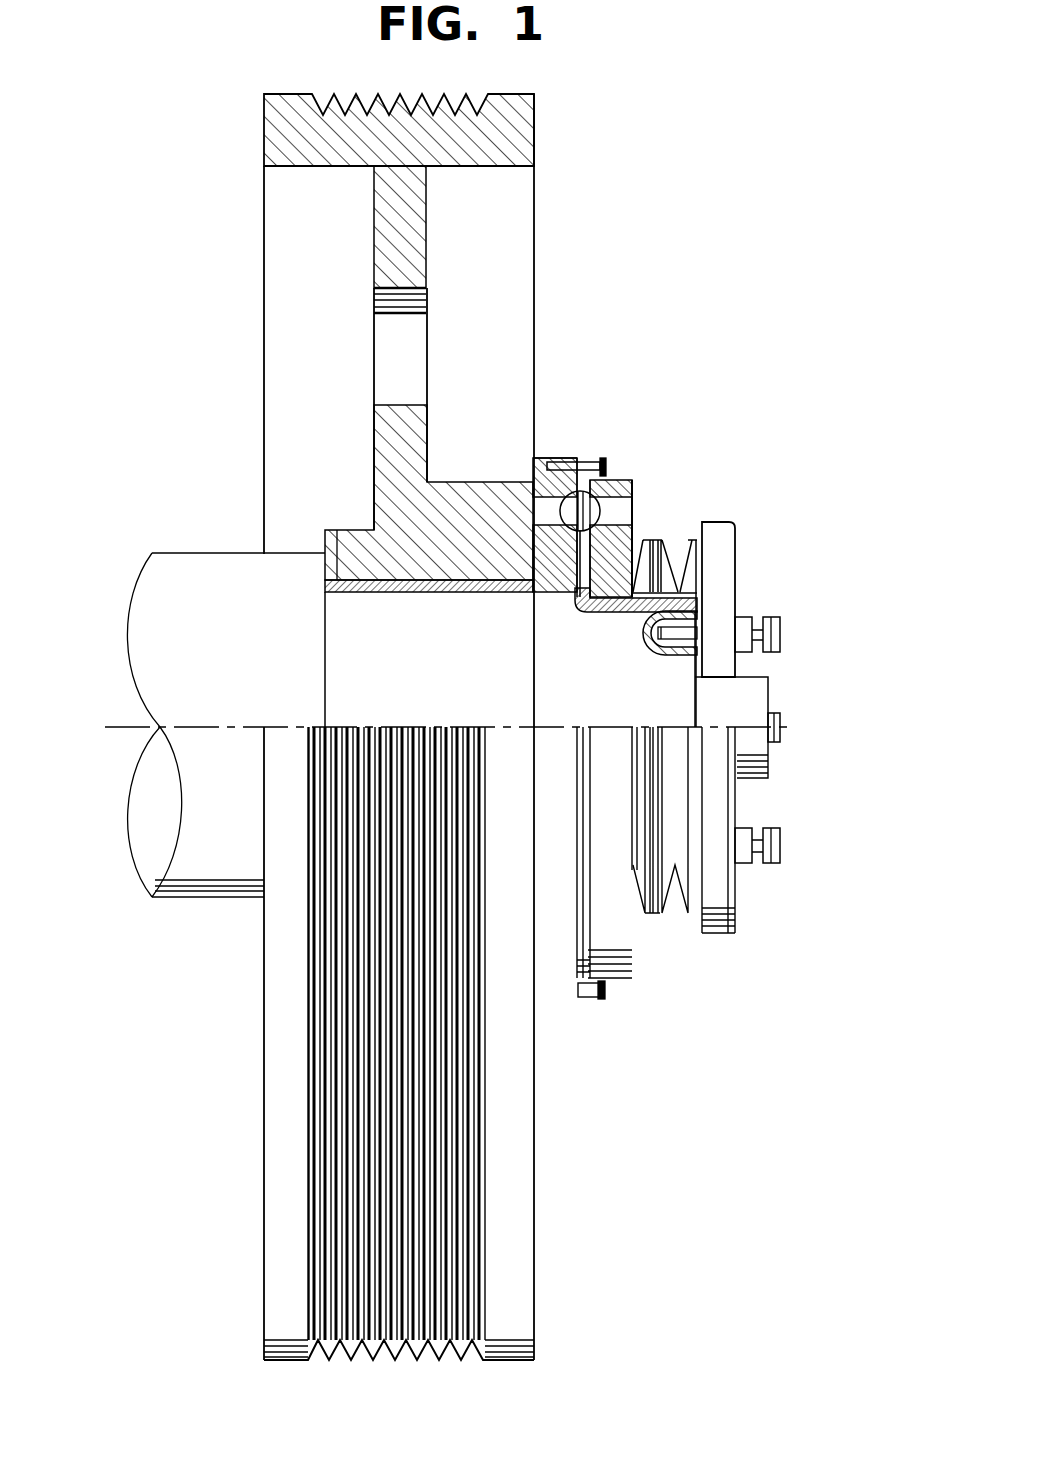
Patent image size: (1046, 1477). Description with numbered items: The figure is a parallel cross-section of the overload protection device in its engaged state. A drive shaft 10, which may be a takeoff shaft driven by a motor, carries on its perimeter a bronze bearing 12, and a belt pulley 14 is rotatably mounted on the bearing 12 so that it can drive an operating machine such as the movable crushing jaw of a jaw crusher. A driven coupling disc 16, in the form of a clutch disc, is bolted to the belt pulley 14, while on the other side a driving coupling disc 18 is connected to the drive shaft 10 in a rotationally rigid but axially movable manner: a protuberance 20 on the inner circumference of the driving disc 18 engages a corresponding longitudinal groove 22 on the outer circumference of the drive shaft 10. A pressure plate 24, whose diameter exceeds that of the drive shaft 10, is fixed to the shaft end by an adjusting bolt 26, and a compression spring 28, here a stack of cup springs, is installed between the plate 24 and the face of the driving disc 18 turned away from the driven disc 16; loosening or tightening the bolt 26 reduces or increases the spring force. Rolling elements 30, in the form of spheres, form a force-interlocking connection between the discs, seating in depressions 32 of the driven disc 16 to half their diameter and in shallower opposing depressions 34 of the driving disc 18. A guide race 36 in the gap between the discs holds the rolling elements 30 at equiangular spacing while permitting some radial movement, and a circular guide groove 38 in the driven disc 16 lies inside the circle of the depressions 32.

The drive shaft 10 is at (160, 652).
The bronze bearing 12 is at (327, 570).
The belt pulley 14 is at (407, 245).
The driven coupling disc 16 is at (563, 458).
The driving coupling disc 18 is at (637, 537).
The protuberance 20 is at (612, 612).
The longitudinal groove 22 is at (663, 655).
The pressure plate 24 is at (712, 592).
The adjusting bolt 26 is at (782, 633).
The compression spring 28 is at (700, 558).
The rolling elements 30 is at (533, 470).
The depressions 32 is at (538, 550).
The depressions 34 is at (617, 495).
The guide race 36 is at (588, 458).
The guide groove 38 is at (577, 593).